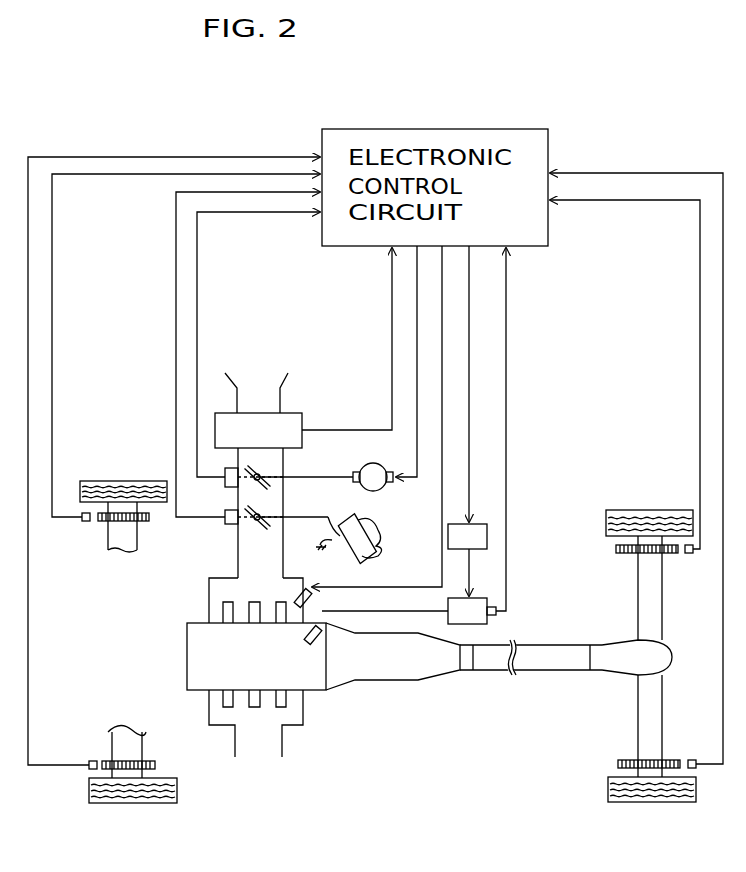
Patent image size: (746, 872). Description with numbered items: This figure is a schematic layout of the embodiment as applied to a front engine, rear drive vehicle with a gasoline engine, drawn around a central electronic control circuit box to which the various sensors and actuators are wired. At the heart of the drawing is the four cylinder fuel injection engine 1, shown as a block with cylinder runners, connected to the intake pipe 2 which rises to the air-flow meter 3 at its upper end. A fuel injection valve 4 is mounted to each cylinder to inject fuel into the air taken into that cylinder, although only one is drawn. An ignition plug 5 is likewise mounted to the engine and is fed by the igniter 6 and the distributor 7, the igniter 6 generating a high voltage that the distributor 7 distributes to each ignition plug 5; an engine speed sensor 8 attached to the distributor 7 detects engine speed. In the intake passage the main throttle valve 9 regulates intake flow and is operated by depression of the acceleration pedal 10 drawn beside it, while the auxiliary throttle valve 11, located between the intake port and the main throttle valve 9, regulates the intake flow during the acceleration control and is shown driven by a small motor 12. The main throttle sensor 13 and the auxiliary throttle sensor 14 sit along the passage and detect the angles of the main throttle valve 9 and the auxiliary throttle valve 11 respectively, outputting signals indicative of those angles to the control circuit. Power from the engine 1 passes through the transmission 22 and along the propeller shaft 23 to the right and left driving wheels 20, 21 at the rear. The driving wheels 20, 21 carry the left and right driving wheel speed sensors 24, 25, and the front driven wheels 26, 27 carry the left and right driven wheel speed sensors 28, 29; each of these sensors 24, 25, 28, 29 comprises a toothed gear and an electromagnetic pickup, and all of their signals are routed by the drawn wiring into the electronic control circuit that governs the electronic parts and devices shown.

The four cylinder fuel injection engine 1 is at (184, 691).
The intake pipe 2 is at (238, 556).
The air-flow meter 3 is at (293, 413).
The fuel injection valve 4 is at (309, 591).
The ignition plug 5 is at (313, 626).
The igniter 6 is at (487, 536).
The distributor 7 is at (482, 599).
The engine speed sensor 8 is at (498, 615).
The main throttle valve 9 is at (268, 529).
The acceleration pedal 10 is at (340, 529).
The auxiliary throttle valve 11 is at (255, 470).
The motor 12 is at (382, 470).
The main throttle sensor 13 is at (226, 524).
The auxiliary throttle sensor 14 is at (226, 488).
The driving wheel 20 is at (612, 802).
The driving wheel 21 is at (617, 510).
The transmission 22 is at (400, 690).
The propeller shaft 23 is at (545, 670).
The driving wheel speed sensor 24 is at (692, 760).
The driving wheel speed sensor 25 is at (689, 553).
The driven wheel 26 is at (165, 803).
The driven wheel 27 is at (96, 481).
The driven wheel speed sensor 28 is at (105, 761).
The driven wheel speed sensor 29 is at (105, 522).